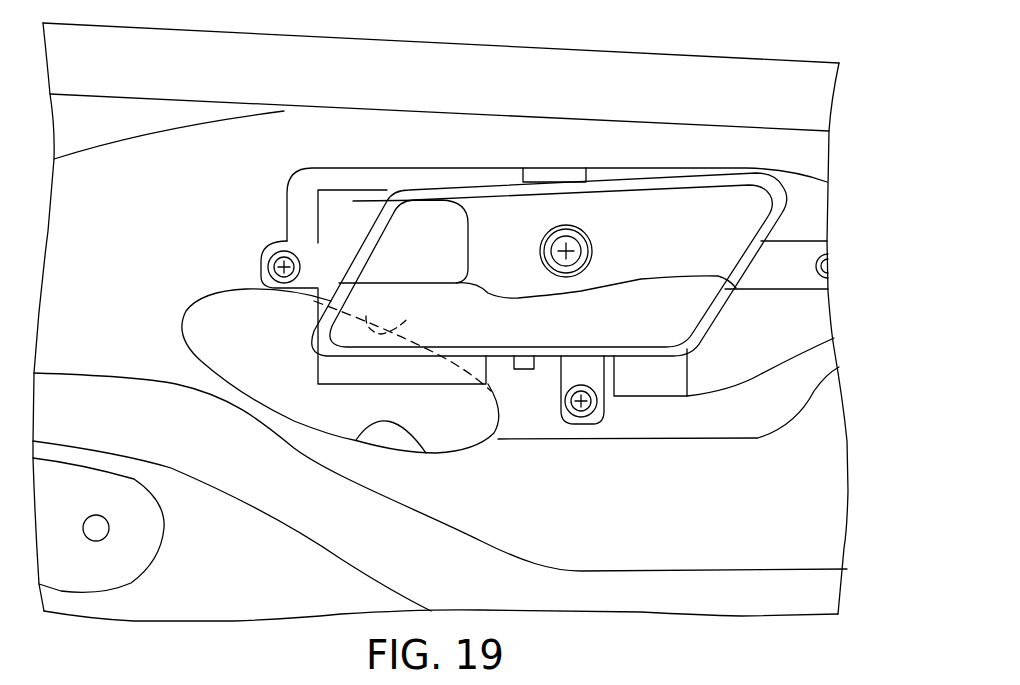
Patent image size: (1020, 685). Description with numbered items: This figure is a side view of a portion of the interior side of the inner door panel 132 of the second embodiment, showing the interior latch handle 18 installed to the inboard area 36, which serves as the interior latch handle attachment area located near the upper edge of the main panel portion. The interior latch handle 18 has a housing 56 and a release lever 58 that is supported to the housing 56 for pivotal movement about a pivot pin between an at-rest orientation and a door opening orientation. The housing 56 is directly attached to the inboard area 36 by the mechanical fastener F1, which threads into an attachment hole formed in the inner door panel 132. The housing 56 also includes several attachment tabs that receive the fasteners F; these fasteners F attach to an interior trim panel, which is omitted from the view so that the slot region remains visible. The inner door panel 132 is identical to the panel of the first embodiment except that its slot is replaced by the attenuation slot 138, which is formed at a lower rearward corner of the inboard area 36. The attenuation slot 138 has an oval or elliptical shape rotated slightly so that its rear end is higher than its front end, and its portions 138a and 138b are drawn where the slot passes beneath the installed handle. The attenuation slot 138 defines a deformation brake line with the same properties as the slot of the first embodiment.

The inner door panel 132 is at (737, 50).
The interior latch handle 18 is at (549, 216).
The inboard area 36 is at (357, 170).
The housing 56 is at (643, 181).
The release lever 58 is at (666, 305).
The attenuation slot 138 is at (243, 327).
The hidden edge of pocket 138a is at (408, 317).
The bump of pocket 138b is at (423, 452).
The fasteners F is at (277, 255).
The mechanical fastener F1 is at (553, 242).